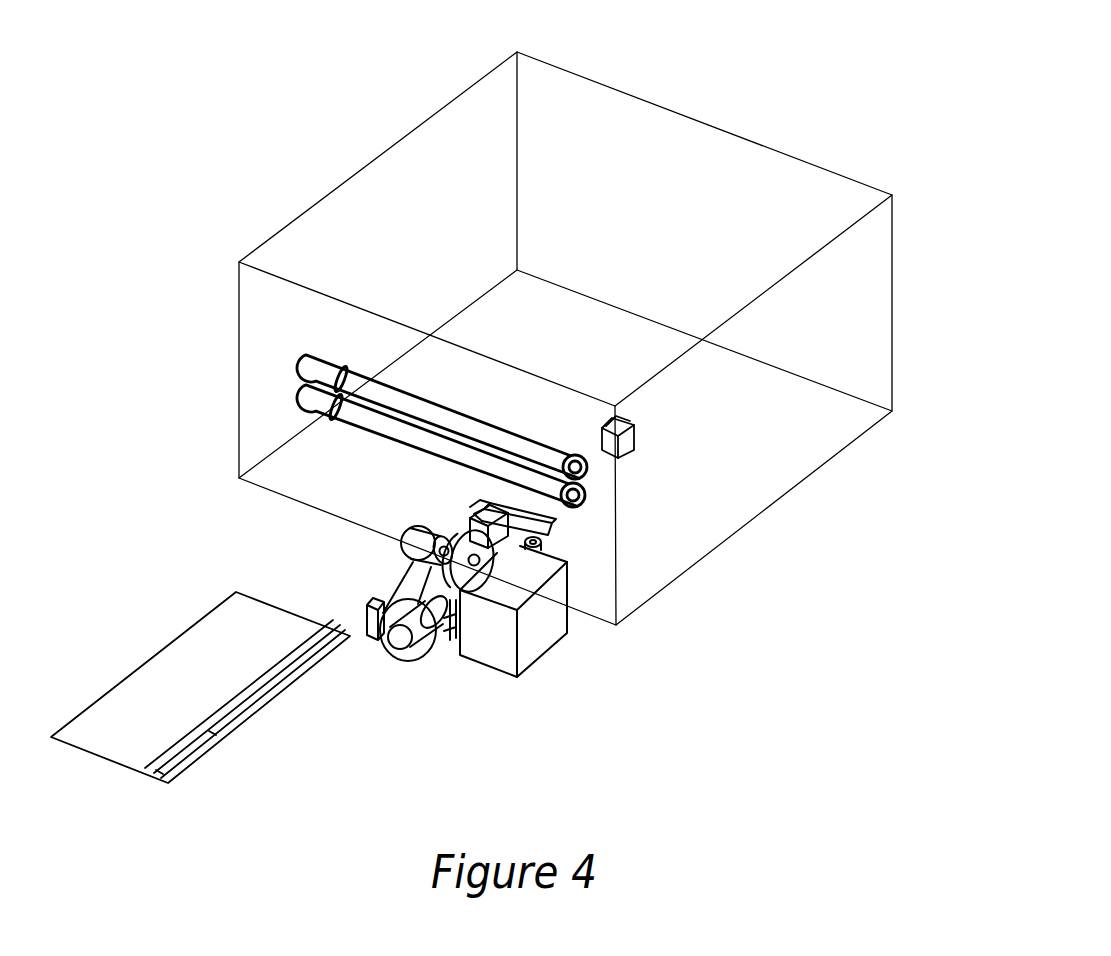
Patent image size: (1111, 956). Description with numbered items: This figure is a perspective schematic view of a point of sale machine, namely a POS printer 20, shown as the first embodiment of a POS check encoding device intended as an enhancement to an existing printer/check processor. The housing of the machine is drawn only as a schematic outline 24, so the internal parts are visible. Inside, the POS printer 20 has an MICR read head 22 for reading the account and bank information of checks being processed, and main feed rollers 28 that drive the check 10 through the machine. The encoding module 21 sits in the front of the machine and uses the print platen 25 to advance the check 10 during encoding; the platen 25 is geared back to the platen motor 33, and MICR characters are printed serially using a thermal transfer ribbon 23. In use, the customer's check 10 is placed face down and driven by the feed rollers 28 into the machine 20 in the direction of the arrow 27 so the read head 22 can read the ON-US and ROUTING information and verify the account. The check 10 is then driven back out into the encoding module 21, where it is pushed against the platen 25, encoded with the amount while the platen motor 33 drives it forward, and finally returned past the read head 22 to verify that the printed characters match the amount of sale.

The check 10 is at (133, 670).
The POS printer 20 is at (1018, 133).
The encoding module 21 is at (493, 609).
The MICR read head 22 is at (632, 441).
The thermal transfer ribbon 23 is at (408, 587).
The schematic outline 24 is at (743, 137).
The print platen 25 is at (427, 537).
The arrow 27 is at (333, 687).
The feed rollers 28 is at (458, 423).
The platen motor 33 is at (540, 633).